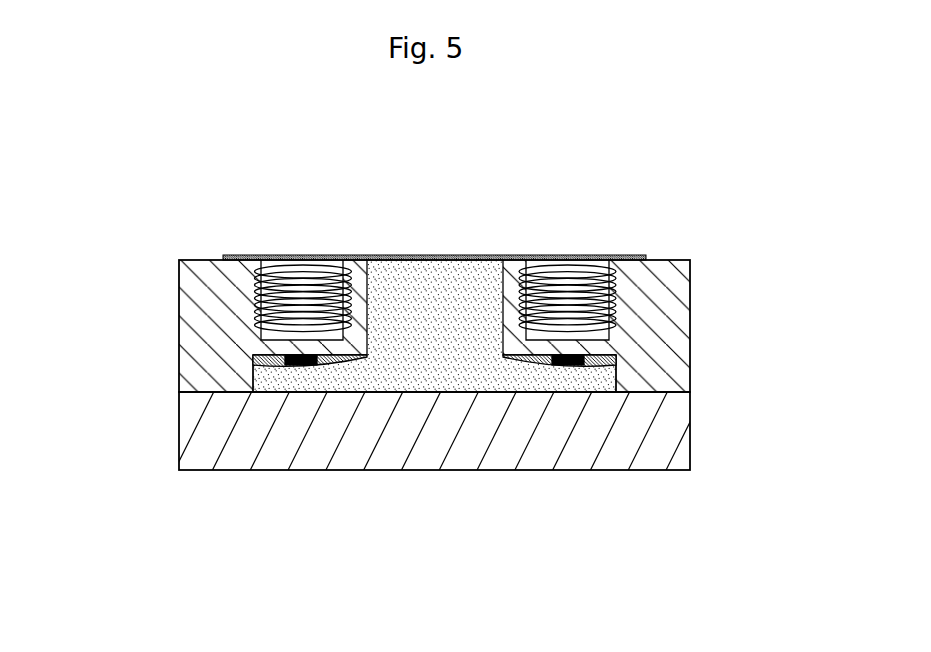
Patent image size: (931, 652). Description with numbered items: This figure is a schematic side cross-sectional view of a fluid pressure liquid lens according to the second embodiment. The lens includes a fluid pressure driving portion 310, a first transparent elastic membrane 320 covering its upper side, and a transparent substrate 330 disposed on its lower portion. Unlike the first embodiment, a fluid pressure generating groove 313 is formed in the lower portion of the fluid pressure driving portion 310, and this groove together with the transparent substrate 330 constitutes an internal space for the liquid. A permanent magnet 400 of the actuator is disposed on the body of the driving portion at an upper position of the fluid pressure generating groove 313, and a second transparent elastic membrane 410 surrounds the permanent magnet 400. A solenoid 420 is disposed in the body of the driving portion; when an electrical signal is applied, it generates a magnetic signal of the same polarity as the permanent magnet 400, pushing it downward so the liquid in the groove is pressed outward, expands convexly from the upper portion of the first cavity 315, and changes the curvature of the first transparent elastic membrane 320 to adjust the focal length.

The fluid pressure driving portion 310 is at (200, 332).
The fluid pressure generating groove 313 is at (307, 381).
The first cavity 315 is at (440, 300).
The first transparent elastic membrane 320 is at (633, 253).
The transparent substrate 330 is at (437, 452).
The permanent magnet 400 is at (608, 346).
The second transparent elastic membrane 410 is at (587, 365).
The solenoid 420 is at (607, 273).